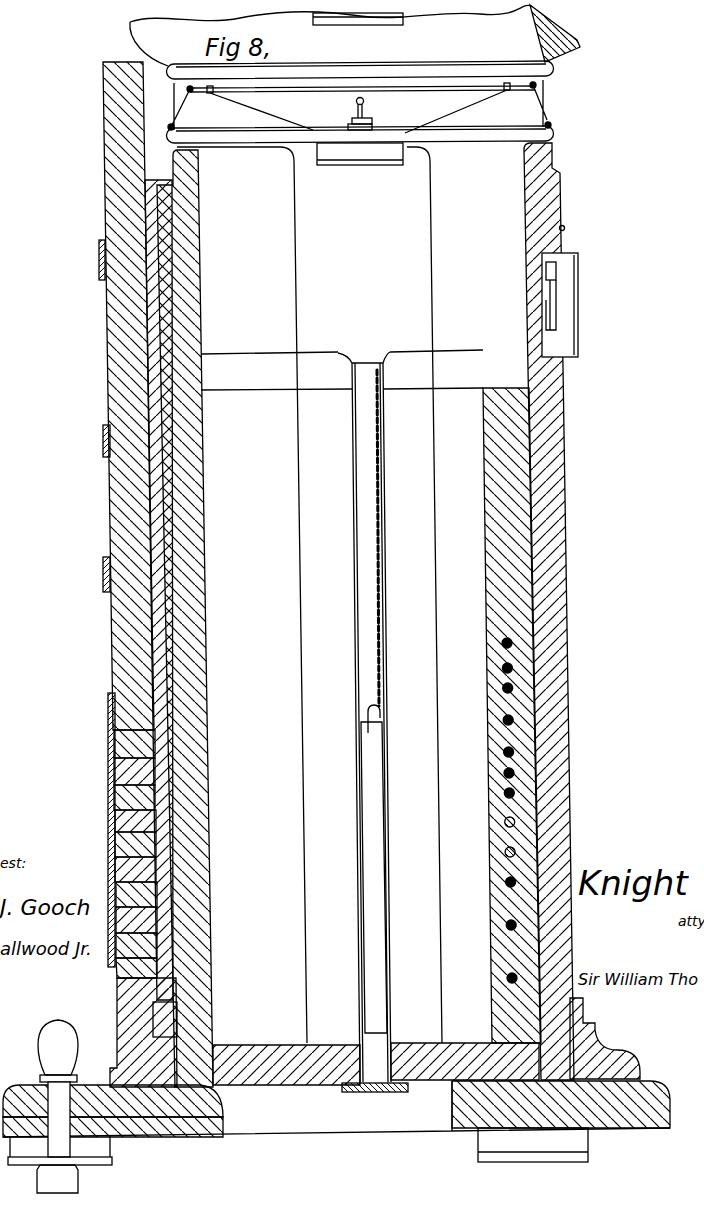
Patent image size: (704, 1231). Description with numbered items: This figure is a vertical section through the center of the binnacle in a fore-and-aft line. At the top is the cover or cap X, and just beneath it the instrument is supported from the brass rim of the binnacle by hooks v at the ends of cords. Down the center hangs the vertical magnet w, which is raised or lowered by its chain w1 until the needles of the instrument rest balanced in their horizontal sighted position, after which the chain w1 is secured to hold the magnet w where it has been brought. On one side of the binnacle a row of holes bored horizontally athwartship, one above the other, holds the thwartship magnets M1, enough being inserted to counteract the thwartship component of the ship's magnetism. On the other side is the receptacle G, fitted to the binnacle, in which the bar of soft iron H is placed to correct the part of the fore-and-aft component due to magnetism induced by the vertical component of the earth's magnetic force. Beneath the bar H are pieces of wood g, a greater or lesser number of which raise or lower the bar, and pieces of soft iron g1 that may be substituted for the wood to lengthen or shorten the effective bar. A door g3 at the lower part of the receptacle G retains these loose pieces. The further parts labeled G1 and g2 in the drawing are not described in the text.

The cover or cap X is at (355, 85).
The hooks v is at (211, 93).
The receptacle G is at (115, 396).
The outer casing strip G1 is at (99, 830).
The bar of soft iron H is at (144, 590).
The pieces of wood g is at (135, 845).
The pieces of soft iron g1 is at (134, 744).
The packing ring g2 is at (135, 844).
The door g3 is at (123, 867).
The thwartship magnets M1 is at (592, 848).
The chain w1 is at (379, 545).
The vertical magnet w is at (388, 860).